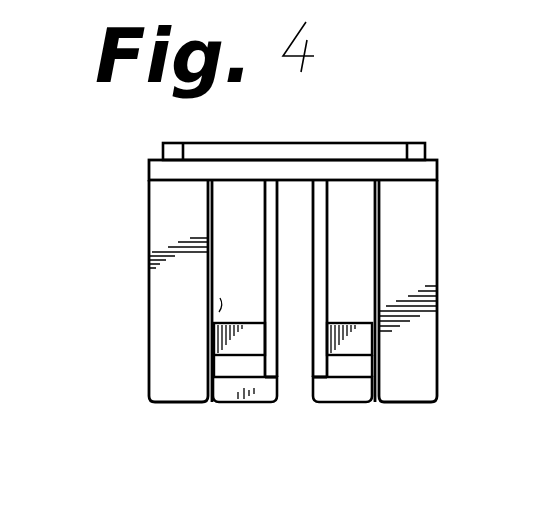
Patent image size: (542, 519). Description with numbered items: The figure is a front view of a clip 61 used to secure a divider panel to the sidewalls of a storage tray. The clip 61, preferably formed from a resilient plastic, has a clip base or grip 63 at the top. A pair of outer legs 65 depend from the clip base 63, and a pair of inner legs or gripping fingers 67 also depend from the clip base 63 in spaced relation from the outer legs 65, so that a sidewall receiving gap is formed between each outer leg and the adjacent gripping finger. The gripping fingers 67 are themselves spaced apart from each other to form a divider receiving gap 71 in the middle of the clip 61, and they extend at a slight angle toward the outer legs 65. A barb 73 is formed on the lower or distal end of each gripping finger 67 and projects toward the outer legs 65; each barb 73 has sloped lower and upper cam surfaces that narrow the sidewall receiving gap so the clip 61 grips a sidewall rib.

The clip 61 is at (82, 131).
The clip base 63 is at (337, 170).
The outer legs 65 is at (172, 403).
The gripping fingers 67 is at (233, 223).
The divider receiving gap 71 is at (314, 262).
The barb 73 is at (253, 399).